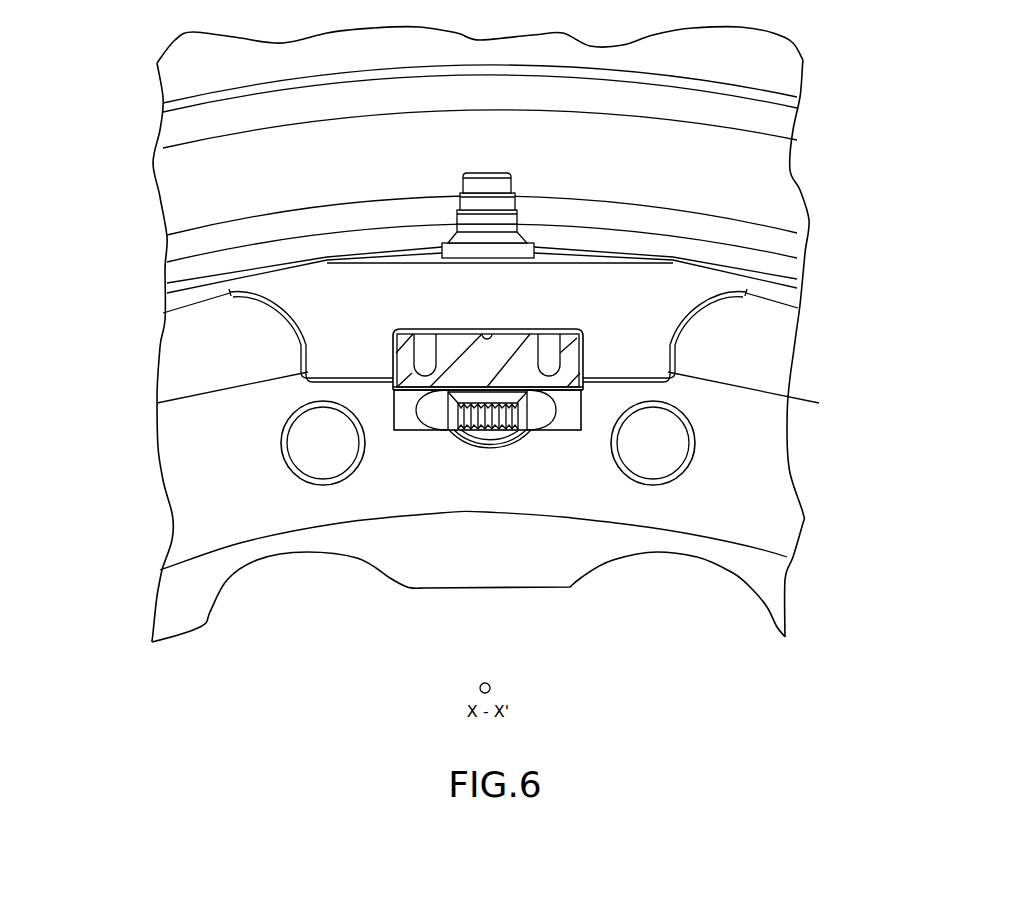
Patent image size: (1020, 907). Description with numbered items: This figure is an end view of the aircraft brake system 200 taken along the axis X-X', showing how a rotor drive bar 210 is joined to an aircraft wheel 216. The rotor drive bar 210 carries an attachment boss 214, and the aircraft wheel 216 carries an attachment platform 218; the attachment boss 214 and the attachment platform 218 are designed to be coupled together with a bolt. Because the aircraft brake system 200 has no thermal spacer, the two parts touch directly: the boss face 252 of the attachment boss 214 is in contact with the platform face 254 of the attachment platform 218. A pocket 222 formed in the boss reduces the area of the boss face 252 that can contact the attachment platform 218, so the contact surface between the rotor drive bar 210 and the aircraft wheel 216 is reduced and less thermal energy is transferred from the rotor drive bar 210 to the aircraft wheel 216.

The aircraft brake system 200 is at (86, 402).
The rotor drive bar 210 is at (572, 418).
The attachment boss 214 is at (437, 373).
The aircraft wheel 216 is at (777, 203).
The attachment platform 218 is at (623, 300).
The pocket 222 is at (543, 352).
The boss face 252 is at (514, 326).
The platform face 254 is at (532, 333).